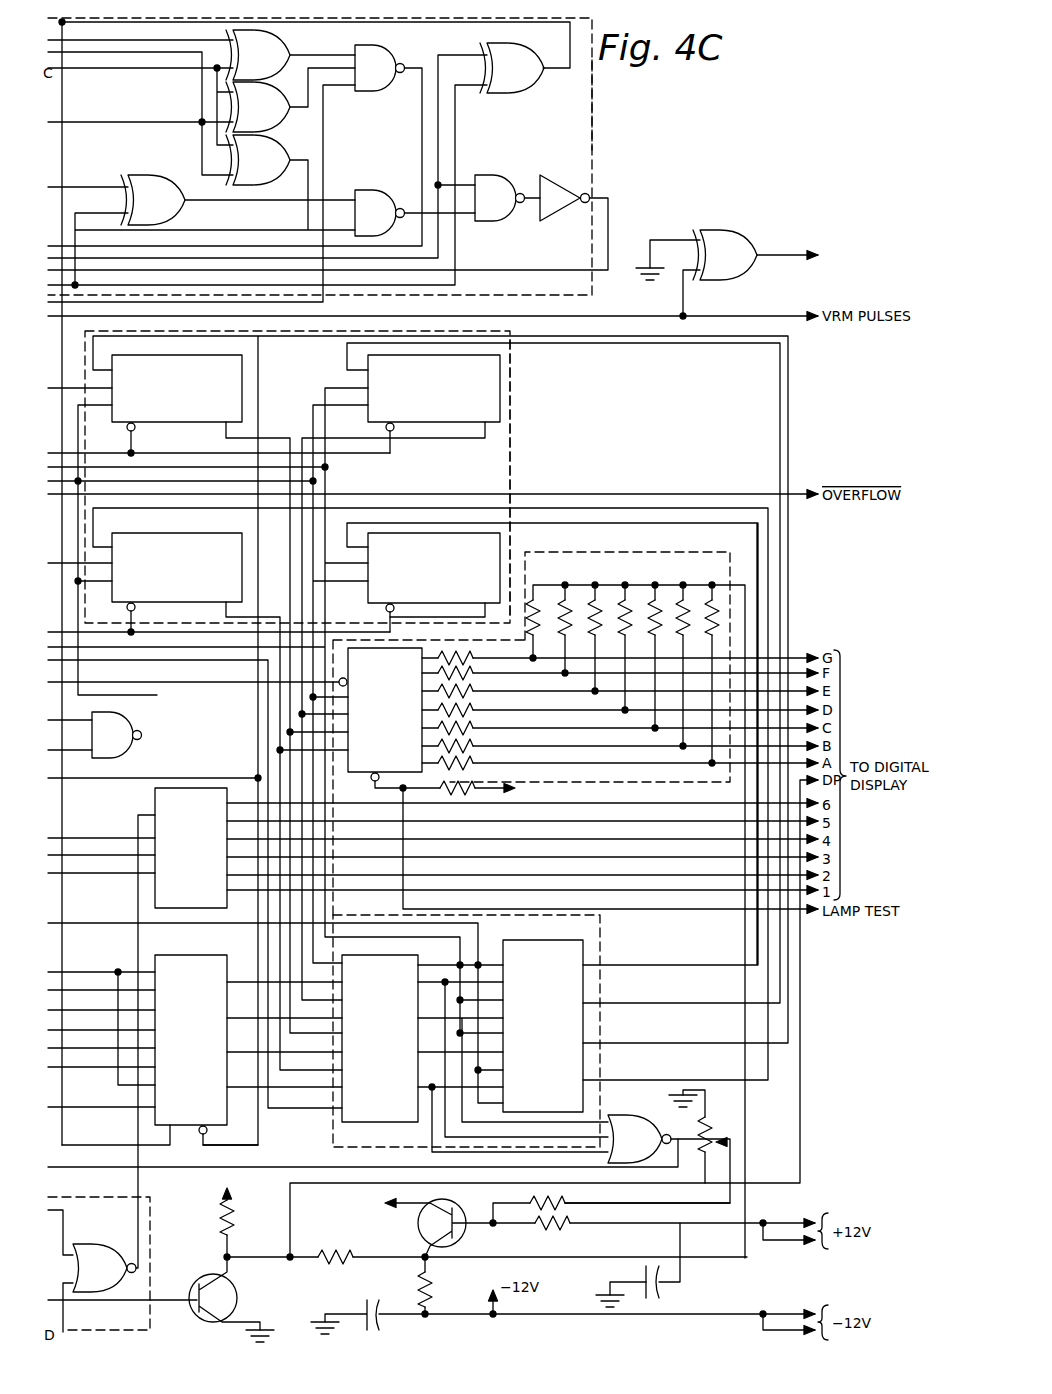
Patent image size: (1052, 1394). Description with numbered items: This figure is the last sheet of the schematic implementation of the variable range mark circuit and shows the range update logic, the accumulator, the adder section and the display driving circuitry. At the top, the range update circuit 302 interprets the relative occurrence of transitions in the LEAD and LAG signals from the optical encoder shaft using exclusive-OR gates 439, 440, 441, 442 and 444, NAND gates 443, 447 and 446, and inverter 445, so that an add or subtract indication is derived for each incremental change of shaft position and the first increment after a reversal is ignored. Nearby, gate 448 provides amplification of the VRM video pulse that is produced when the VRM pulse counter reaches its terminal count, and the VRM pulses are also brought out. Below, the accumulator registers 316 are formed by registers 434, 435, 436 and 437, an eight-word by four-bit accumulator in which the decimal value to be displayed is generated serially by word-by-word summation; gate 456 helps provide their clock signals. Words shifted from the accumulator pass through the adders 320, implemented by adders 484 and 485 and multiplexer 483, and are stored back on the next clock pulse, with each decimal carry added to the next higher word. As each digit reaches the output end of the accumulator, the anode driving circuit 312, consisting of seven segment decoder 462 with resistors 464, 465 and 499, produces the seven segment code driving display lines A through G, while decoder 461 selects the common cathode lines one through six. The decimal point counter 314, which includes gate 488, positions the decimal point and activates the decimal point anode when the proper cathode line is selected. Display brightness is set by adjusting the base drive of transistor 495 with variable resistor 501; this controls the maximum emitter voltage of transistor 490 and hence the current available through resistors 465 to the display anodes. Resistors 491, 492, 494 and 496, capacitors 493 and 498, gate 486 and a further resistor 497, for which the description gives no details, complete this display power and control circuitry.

The range update circuit 302 is at (594, 108).
The anode driving circuit 312 is at (565, 553).
The decimal point counter 314 is at (60, 1197).
The accumulator registers 316 is at (512, 365).
The adders 320 is at (600, 934).
The register 434 is at (177, 404).
The register 435 is at (434, 404).
The register 436 is at (177, 582).
The register 437 is at (434, 582).
The exclusive-OR gate 439 is at (148, 182).
The exclusive-OR gate 440 is at (268, 58).
The exclusive-OR gate 441 is at (270, 112).
The exclusive-OR gate 442 is at (268, 150).
The NAND gate 443 is at (382, 54).
The exclusive-OR gate 444 is at (512, 54).
The inverter 445 is at (552, 184).
The NAND gate 446 is at (490, 178).
The NAND gate 447 is at (370, 194).
The gate 448 is at (718, 238).
The gate 456 is at (122, 742).
The decoder 461 is at (191, 848).
The seven segment decoder 462 is at (389, 718).
The resistors 464 is at (474, 693).
The resistors 465 is at (626, 585).
The multiplexer 483 is at (206, 1050).
The adder 484 is at (380, 1038).
The adder 485 is at (543, 1026).
The gate 486 is at (636, 1130).
The gate 488 is at (90, 1256).
The transistor 490 is at (232, 1294).
The resistor 491 is at (224, 1220).
The resistor 492 is at (322, 1255).
The capacitor 493 is at (368, 1308).
The resistor 494 is at (430, 1290).
The transistor 495 is at (418, 1221).
The resistor 496 is at (566, 1224).
The resistor 497 is at (534, 1204).
The capacitor 498 is at (662, 1285).
The resistor 499 is at (458, 790).
The variable resistor 501 is at (708, 1124).